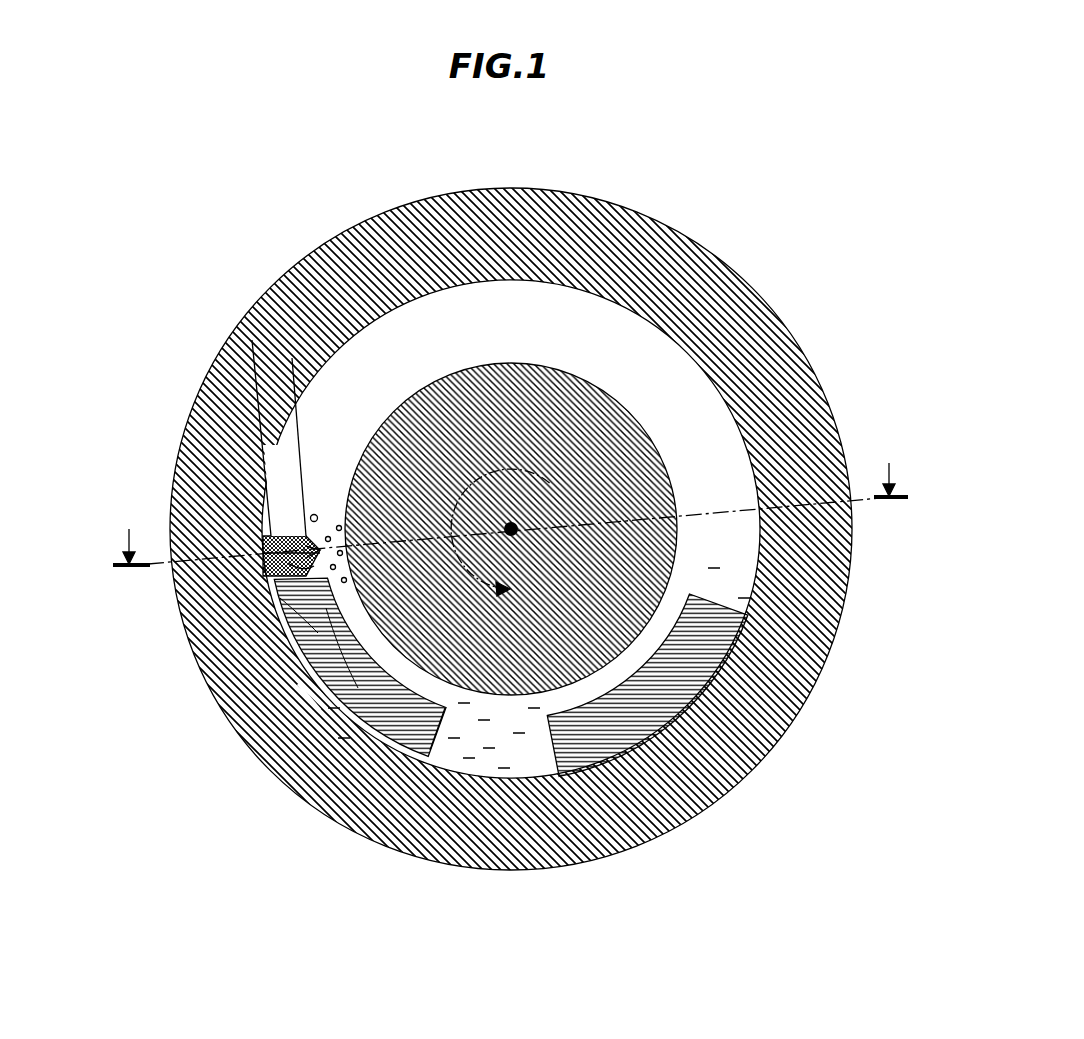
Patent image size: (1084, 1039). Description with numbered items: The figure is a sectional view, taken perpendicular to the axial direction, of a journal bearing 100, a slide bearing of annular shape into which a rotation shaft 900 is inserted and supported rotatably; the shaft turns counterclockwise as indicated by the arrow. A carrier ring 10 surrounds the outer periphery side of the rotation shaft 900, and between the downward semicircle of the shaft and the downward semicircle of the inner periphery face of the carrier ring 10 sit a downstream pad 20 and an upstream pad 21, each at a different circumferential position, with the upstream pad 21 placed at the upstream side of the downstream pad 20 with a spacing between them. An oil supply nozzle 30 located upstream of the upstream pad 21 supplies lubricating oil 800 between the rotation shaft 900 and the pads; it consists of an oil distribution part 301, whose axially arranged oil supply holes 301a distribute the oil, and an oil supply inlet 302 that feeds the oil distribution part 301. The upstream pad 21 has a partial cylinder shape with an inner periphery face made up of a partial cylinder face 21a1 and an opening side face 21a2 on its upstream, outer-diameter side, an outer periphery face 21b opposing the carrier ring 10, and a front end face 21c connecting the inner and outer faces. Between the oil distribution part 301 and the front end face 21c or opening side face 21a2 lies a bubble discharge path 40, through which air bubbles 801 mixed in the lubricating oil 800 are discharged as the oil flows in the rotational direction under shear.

The journal bearing 100 is at (510, 137).
The carrier ring 10 is at (690, 266).
The rotation shaft 900 is at (640, 445).
The downstream pad 20 is at (686, 812).
The upstream pad 21 is at (385, 705).
The partial cylinder face 21a1 is at (350, 655).
The opening side face 21a2 is at (322, 612).
The outer periphery face 21b is at (445, 742).
The front end face 21c is at (305, 592).
The oil supply nozzle 30 is at (197, 270).
The oil distribution part 301 is at (242, 332).
The oil supply inlet 302 is at (232, 356).
The oil supply hole 301a is at (300, 541).
The bubble discharge path 40 is at (300, 562).
The lubricating oil 800 is at (329, 493).
The air bubble 801 is at (305, 506).